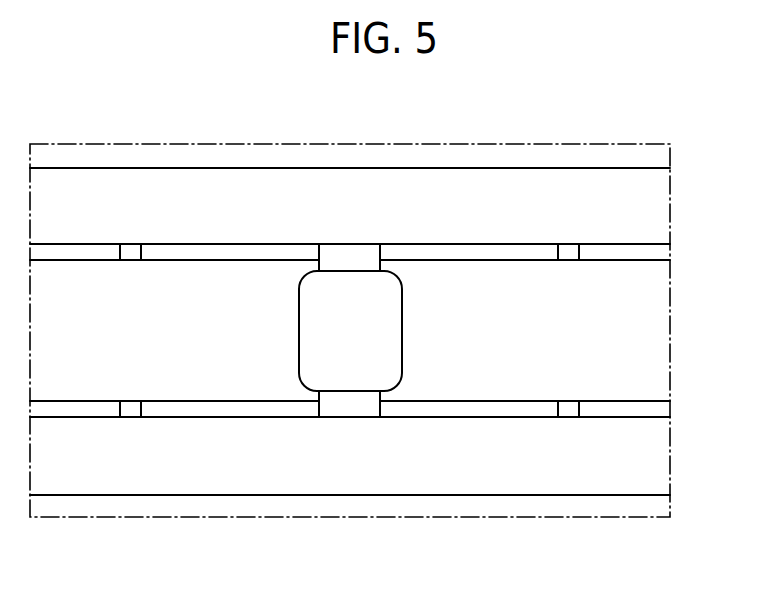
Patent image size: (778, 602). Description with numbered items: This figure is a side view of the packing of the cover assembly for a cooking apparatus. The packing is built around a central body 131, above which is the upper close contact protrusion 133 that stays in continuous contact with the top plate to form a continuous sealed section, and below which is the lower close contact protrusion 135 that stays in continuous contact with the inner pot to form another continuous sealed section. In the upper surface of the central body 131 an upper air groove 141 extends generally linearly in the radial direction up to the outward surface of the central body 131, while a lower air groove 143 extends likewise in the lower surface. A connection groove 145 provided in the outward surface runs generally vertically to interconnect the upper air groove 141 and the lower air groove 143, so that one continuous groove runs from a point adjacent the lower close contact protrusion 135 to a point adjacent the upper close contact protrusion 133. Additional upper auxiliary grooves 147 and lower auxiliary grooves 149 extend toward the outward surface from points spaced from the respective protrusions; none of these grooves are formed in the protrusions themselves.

The central body 131 is at (650, 330).
The upper close contact protrusion 133 is at (650, 209).
The lower close contact protrusion 135 is at (650, 455).
The upper air groove 141 is at (347, 257).
The lower air groove 143 is at (358, 409).
The connection groove 145 is at (366, 350).
The upper auxiliary groove 147 is at (133, 252).
The lower auxiliary groove 149 is at (129, 417).